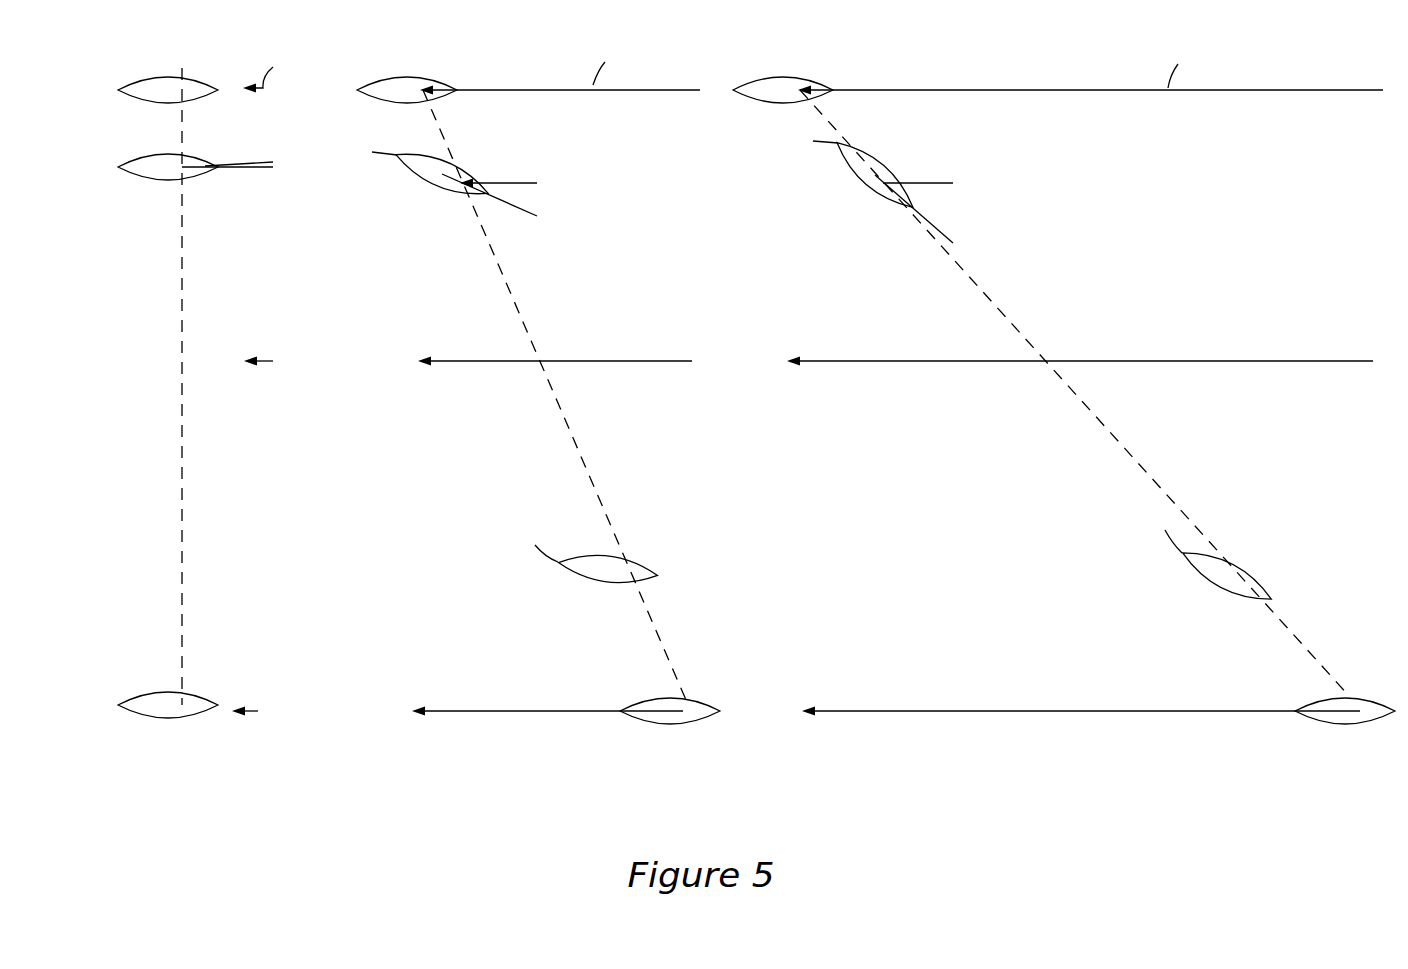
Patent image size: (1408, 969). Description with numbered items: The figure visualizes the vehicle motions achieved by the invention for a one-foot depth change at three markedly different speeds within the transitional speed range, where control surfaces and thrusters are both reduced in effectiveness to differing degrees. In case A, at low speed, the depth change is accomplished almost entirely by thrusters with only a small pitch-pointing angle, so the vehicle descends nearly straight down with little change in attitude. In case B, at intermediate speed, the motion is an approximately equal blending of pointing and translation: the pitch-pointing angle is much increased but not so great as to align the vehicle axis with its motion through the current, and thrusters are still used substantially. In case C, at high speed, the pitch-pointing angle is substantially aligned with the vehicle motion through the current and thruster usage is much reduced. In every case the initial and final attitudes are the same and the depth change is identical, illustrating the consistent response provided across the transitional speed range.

The low-speed case A is at (206, 434).
The intermediate-speed case B is at (538, 438).
The high-speed case C is at (1069, 437).